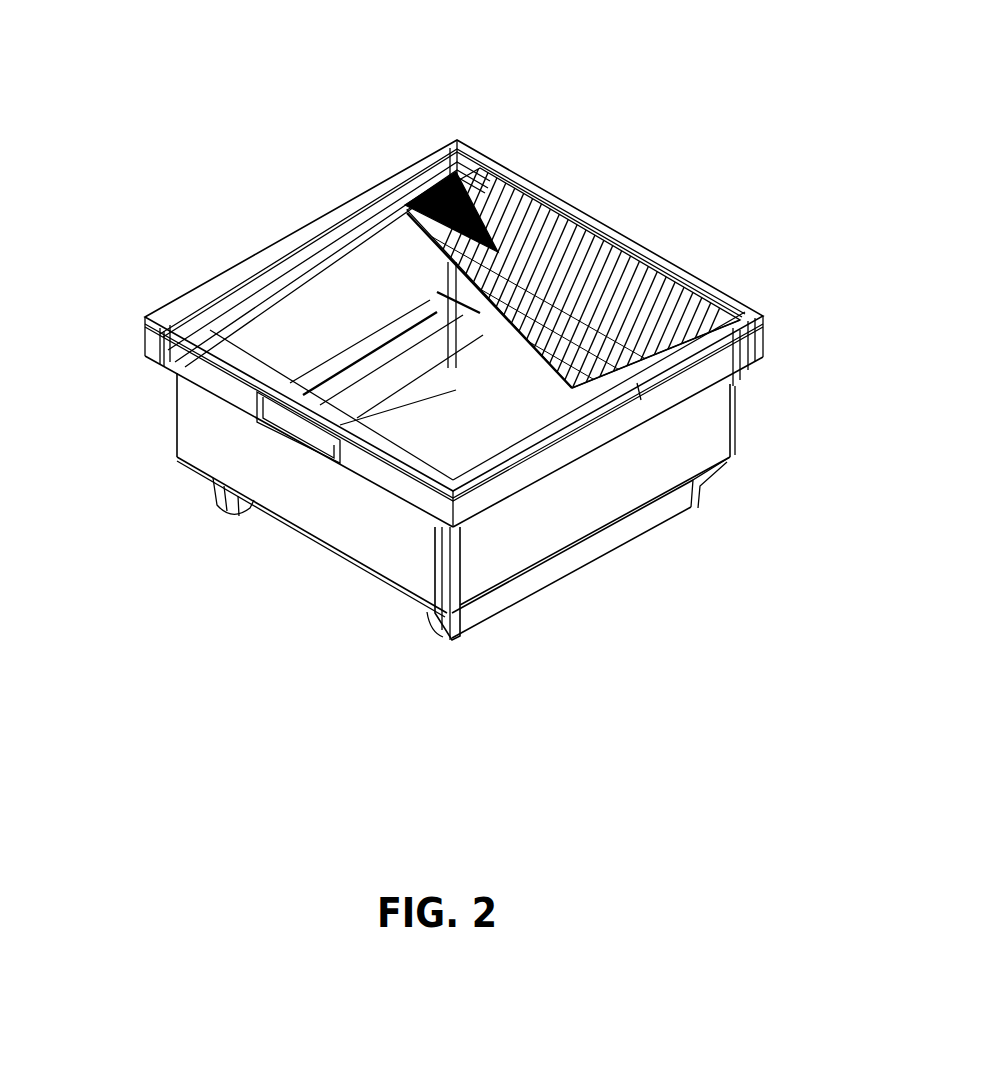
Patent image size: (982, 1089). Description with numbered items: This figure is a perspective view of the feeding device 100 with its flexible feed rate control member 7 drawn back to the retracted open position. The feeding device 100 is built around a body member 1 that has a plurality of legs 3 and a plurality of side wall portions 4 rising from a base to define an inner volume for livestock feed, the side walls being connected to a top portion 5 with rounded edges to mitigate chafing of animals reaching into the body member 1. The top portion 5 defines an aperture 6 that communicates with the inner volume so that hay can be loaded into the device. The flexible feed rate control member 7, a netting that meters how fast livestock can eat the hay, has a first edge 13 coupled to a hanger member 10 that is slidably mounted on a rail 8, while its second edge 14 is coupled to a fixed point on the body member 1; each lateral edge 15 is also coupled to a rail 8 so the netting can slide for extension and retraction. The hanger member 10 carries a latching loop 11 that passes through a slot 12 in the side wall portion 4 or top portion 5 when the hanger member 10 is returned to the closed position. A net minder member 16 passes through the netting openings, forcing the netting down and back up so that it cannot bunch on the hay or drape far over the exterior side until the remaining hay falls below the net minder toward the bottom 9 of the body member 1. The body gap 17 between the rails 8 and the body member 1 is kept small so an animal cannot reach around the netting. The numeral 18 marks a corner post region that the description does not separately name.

The feeding device 100 is at (277, 597).
The body member 1 is at (380, 495).
The legs 3 is at (632, 571).
The side wall portions 4 is at (595, 574).
The top portion 5 is at (790, 447).
The aperture 6 is at (263, 263).
The flexible feed rate control member 7 is at (553, 210).
The rail 8 is at (393, 208).
The bottom 9 is at (455, 387).
The hanger member 10 is at (405, 208).
The latching loop 11 is at (577, 230).
The slot 12 is at (300, 427).
The first edge 13 is at (637, 383).
The second edge 14 is at (637, 262).
The lateral edge 15 is at (415, 200).
The net minder member 16 is at (792, 515).
The body gap 17 is at (437, 277).
The corner post 18 is at (384, 610).